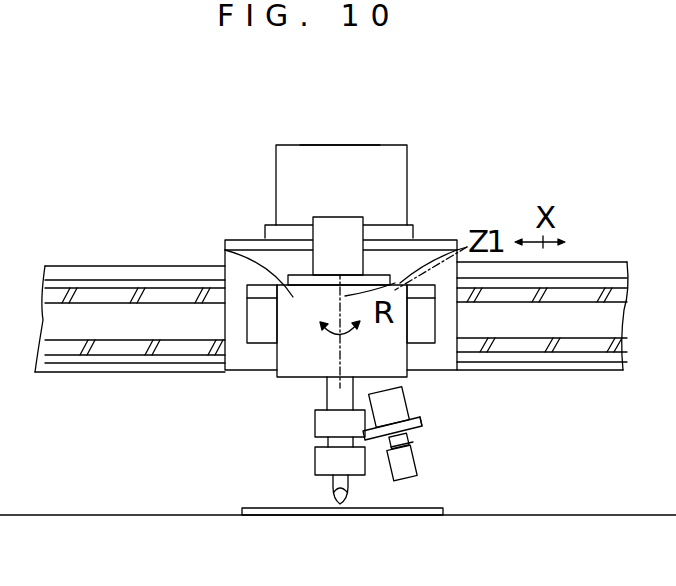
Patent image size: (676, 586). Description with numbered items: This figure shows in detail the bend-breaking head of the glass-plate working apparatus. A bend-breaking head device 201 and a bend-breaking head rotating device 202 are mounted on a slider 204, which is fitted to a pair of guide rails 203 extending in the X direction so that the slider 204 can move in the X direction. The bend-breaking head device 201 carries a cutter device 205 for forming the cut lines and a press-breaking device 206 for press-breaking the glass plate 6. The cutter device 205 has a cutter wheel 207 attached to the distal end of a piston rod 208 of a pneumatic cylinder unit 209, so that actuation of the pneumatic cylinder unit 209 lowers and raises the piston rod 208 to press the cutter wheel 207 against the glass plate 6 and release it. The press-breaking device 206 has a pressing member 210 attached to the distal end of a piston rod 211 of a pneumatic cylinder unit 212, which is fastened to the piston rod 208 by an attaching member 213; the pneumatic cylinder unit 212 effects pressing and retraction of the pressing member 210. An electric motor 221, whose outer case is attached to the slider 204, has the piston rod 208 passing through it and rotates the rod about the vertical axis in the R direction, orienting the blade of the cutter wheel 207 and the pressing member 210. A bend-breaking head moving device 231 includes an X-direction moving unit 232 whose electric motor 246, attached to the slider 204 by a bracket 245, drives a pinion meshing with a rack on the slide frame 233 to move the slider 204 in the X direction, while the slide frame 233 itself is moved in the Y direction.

The glass plate 6 is at (410, 516).
The bend-breaking head device 201 is at (303, 438).
The bend-breaking head rotating device 202 is at (436, 379).
The guide rails 203 is at (102, 343).
The slider 204 is at (230, 372).
The cutter device 205 is at (304, 471).
The press-breaking device 206 is at (434, 465).
The cutter wheel 207 is at (340, 515).
The piston rod 208 is at (327, 398).
The pneumatic cylinder unit 209 is at (363, 223).
The pressing member 210 is at (414, 469).
The piston rod 211 is at (407, 438).
The pneumatic cylinder unit 212 is at (410, 402).
The attaching member 213 is at (421, 423).
The electric motor 221 is at (225, 250).
The bend-breaking head moving device 231 is at (416, 156).
The X-direction moving unit 232 is at (268, 178).
The slide frame 233 is at (603, 267).
The bracket 245 is at (242, 242).
The electric motor 246 is at (348, 146).